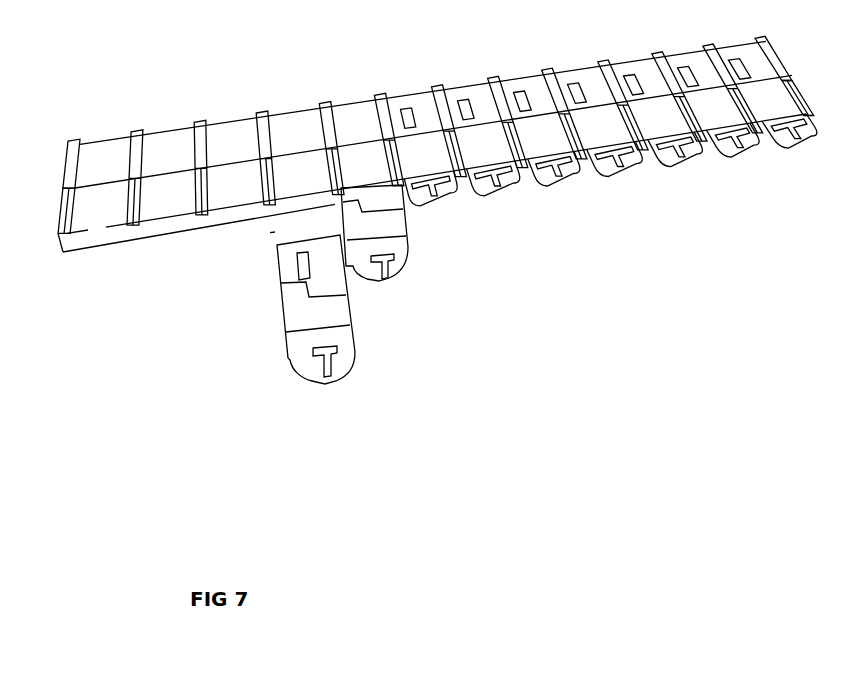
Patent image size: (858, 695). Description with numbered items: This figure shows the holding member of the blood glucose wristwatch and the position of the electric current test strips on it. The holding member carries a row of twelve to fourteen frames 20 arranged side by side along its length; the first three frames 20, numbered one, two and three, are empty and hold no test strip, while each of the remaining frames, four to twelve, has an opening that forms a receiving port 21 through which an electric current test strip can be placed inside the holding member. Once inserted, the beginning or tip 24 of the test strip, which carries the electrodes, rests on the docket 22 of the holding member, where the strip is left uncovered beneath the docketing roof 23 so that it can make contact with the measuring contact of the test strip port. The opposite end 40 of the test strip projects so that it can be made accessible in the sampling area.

The frame 20 is at (437, 183).
The receiving port 21 is at (279, 212).
The docket 22 is at (168, 152).
The docketing roof 23 is at (347, 157).
The tip of test strip 24 is at (323, 282).
The end of test strip 40 is at (337, 377).